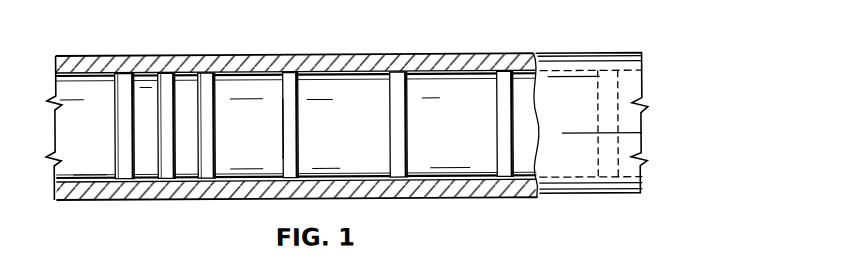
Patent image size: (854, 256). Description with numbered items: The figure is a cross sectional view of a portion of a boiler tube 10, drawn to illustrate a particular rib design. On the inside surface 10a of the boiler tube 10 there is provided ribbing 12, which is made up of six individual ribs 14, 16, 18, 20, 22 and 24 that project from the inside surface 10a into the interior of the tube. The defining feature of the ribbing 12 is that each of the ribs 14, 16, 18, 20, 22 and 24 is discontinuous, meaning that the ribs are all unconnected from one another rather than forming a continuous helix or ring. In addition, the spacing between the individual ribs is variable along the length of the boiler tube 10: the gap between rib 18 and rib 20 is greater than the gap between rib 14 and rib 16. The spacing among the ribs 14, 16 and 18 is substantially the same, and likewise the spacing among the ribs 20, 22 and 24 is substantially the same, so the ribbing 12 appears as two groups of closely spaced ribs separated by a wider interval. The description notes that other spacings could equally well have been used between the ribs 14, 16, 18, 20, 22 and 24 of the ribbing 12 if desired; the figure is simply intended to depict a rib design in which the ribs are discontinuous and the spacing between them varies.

The boiler tube 10 is at (397, 55).
The inside surface 10a is at (356, 79).
The ribbing 12 is at (281, 130).
The rib 14 is at (112, 106).
The rib 16 is at (157, 108).
The rib 18 is at (196, 106).
The rib 20 is at (281, 107).
The rib 22 is at (386, 98).
The rib 24 is at (493, 104).